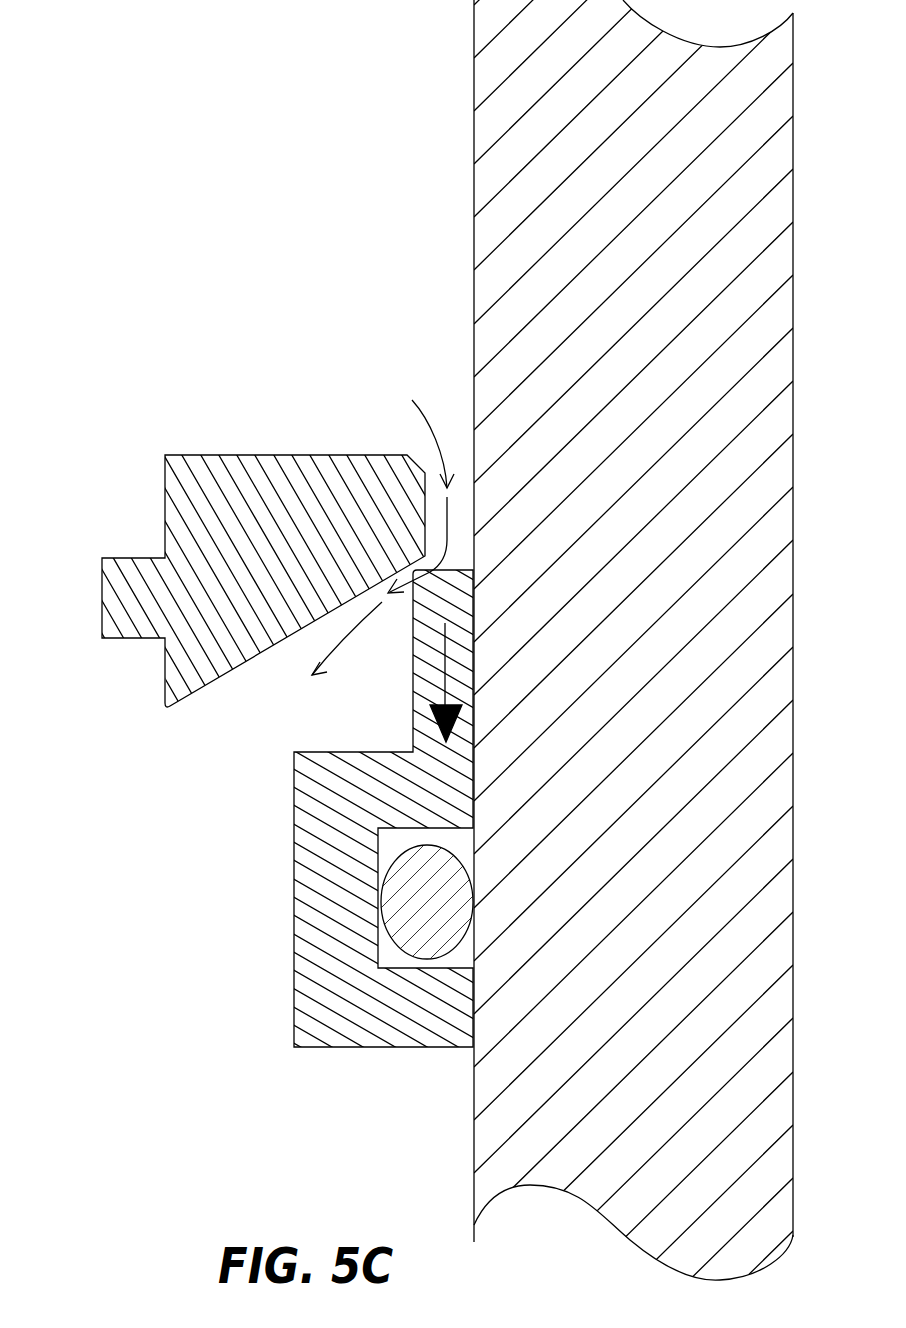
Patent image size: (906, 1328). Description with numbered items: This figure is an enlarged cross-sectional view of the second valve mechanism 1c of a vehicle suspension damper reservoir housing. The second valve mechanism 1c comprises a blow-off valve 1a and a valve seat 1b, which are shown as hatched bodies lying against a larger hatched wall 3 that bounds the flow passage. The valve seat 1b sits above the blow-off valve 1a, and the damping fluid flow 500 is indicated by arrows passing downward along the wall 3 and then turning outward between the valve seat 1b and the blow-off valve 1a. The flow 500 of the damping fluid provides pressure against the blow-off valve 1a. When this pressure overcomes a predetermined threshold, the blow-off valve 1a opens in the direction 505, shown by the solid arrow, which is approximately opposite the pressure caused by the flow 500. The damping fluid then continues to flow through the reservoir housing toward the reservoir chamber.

The wall / pipe body 3 is at (530, 145).
The second valve mechanism 1c is at (88, 455).
The valve seat 1b is at (218, 655).
The blow-off valve 1a is at (322, 842).
The flow 500 is at (405, 402).
The direction 505 is at (445, 680).